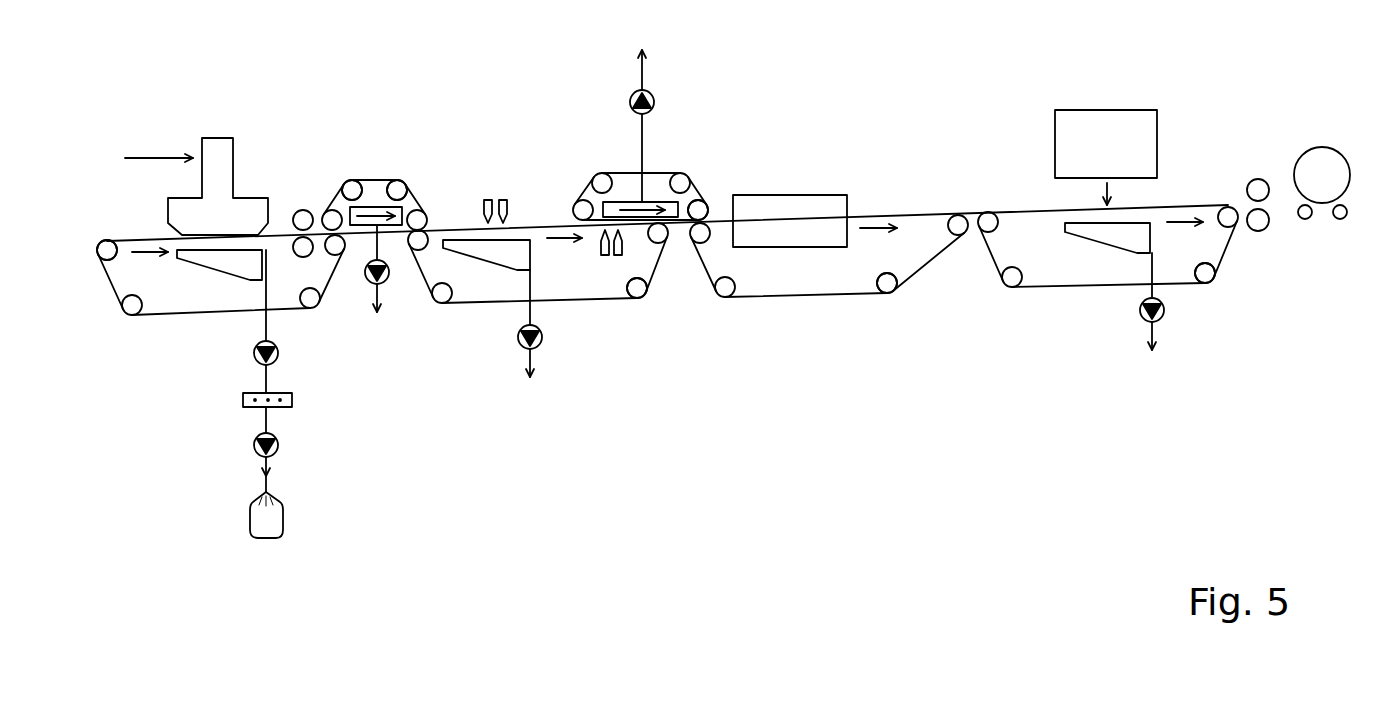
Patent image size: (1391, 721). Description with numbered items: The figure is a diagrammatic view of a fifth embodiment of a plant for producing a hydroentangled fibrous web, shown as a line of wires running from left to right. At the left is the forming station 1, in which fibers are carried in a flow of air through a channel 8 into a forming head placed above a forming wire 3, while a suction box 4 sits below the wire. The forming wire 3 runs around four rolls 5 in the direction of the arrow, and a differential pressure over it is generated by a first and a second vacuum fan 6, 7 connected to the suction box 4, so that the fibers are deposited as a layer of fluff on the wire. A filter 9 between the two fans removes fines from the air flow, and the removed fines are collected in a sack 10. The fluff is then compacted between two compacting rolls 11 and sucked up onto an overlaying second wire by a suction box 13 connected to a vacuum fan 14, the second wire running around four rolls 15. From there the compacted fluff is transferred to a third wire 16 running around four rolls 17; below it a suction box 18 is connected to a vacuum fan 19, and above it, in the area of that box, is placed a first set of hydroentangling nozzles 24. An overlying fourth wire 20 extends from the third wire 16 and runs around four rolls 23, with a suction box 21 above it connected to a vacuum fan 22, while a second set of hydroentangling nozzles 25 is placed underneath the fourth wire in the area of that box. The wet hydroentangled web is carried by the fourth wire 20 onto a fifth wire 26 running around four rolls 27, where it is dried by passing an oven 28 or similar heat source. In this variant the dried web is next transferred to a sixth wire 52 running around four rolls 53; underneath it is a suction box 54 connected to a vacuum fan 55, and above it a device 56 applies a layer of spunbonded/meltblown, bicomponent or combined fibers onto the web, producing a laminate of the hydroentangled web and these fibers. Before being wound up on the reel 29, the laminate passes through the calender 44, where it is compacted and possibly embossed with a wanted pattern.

The forming station 1 is at (217, 128).
The forming wire 3 is at (143, 234).
The suction box 4 is at (210, 270).
The rolls 5 is at (97, 247).
The first vacuum fan 6 is at (253, 353).
The second vacuum fan 7 is at (255, 445).
The channel 8 is at (143, 157).
The filter 9 is at (243, 400).
The sack 10 is at (252, 523).
The compacting rolls 11 is at (312, 208).
The suction box 13 is at (413, 205).
The vacuum fan 14 is at (362, 282).
The rolls 15 is at (348, 180).
The third wire 16 is at (548, 222).
The rolls 17 is at (648, 292).
The suction box 18 is at (486, 270).
The vacuum fan 19 is at (544, 340).
The fourth wire 20 is at (617, 170).
The suction box 21 is at (655, 188).
The vacuum fan 22 is at (656, 98).
The rolls 23 is at (712, 205).
The first set of hydroentangling nozzles 24 is at (470, 200).
The second set of hydroentangling nozzles 25 is at (614, 260).
The fifth wire 26 is at (912, 215).
The rolls 27 is at (896, 290).
The oven 28 is at (815, 195).
The reel 29 is at (1316, 148).
The calender 44 is at (1258, 176).
The sixth wire 52 is at (1028, 205).
The rolls 53 is at (1216, 276).
The suction box 54 is at (1085, 240).
The vacuum fan 55 is at (1170, 312).
The device for applying fibers 56 is at (1160, 128).